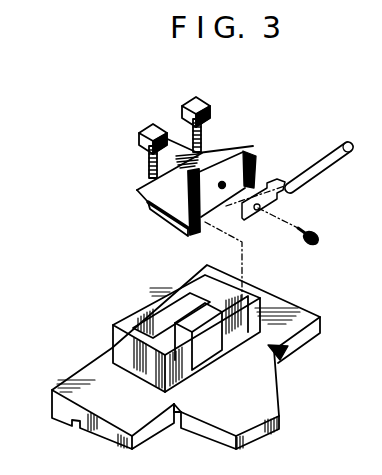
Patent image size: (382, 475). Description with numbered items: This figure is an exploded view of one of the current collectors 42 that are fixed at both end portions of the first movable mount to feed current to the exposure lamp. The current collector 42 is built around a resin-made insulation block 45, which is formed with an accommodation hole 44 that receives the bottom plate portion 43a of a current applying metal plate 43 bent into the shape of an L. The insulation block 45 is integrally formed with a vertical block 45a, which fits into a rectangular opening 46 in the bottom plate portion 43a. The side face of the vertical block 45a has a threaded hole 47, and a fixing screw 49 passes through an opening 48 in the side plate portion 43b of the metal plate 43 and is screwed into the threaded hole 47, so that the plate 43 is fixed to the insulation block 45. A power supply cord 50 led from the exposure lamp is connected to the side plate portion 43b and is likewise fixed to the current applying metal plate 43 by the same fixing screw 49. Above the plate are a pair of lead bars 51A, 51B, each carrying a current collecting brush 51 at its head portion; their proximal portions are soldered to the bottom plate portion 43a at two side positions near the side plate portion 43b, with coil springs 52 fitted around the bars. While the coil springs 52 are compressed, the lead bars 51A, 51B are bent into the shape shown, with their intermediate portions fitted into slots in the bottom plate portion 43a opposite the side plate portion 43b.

The current collector 42 is at (324, 299).
The current applying metal plate 43 is at (213, 184).
The bottom plate portion 43a is at (156, 203).
The side plate portion 43b is at (254, 168).
The accommodation hole 44 is at (144, 316).
The insulation block 45 is at (267, 401).
The vertical block 45a is at (184, 416).
The rectangular opening 46 is at (200, 162).
The threaded hole 47 is at (279, 358).
The opening 48 is at (220, 190).
The fixing screw 49 is at (314, 232).
The power supply cord 50 is at (339, 141).
The current collecting brush 51 is at (177, 141).
The lead bar 51A is at (137, 191).
The lead bar 51B is at (204, 136).
The coil spring 52 is at (150, 166).